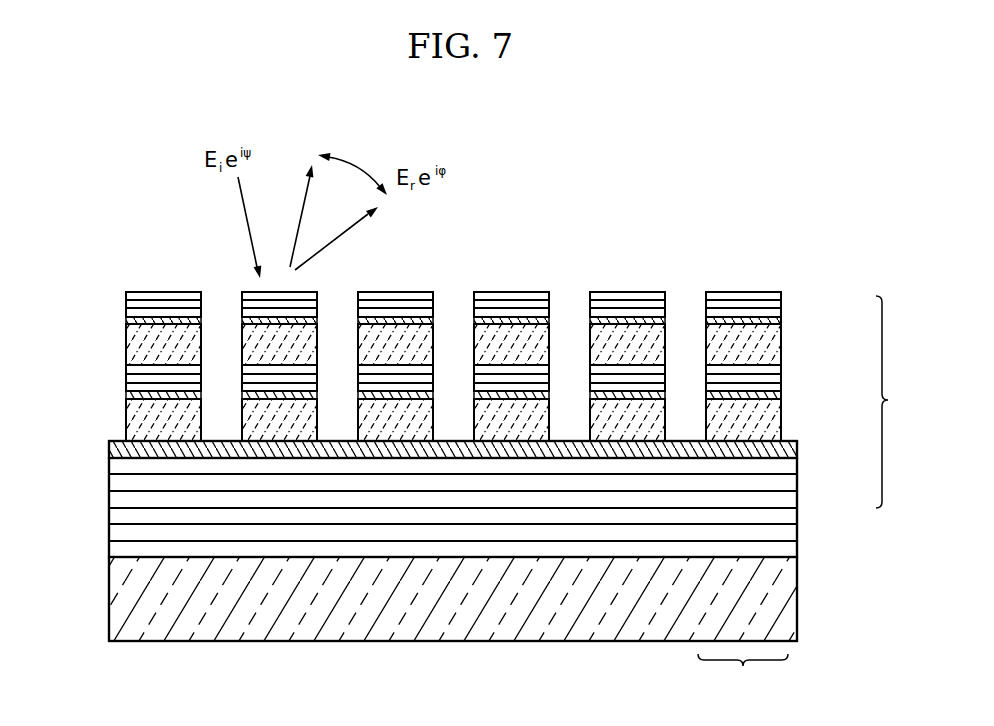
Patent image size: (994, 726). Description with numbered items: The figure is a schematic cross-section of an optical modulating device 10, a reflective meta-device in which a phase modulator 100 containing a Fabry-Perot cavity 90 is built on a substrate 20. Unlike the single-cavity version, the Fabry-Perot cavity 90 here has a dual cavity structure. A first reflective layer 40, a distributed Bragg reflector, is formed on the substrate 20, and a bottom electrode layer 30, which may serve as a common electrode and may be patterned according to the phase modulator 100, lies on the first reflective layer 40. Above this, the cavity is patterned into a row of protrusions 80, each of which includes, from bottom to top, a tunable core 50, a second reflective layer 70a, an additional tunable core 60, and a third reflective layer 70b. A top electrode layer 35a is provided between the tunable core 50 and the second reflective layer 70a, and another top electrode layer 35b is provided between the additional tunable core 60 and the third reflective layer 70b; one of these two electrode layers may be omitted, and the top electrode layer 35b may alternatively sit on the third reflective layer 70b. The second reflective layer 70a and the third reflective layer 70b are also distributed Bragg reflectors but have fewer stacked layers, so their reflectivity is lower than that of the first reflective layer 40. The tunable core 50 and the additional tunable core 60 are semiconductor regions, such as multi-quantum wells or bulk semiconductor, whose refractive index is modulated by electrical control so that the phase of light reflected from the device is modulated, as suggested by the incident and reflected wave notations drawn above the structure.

The optical modulating device 10 is at (788, 213).
The substrate 20 is at (797, 603).
The bottom electrode layer 30 is at (109, 447).
The top electrode layer 35a is at (126, 395).
The top electrode layer 35b is at (126, 321).
The first reflective layer 40 is at (797, 500).
The tunable core 50 is at (782, 423).
The additional tunable core 60 is at (782, 348).
The second reflective layer 70a is at (782, 380).
The third reflective layer 70b is at (782, 306).
The protrusion 80 is at (729, 276).
The Fabry-Perot cavity 90 is at (896, 402).
The phase modulator 100 is at (743, 676).